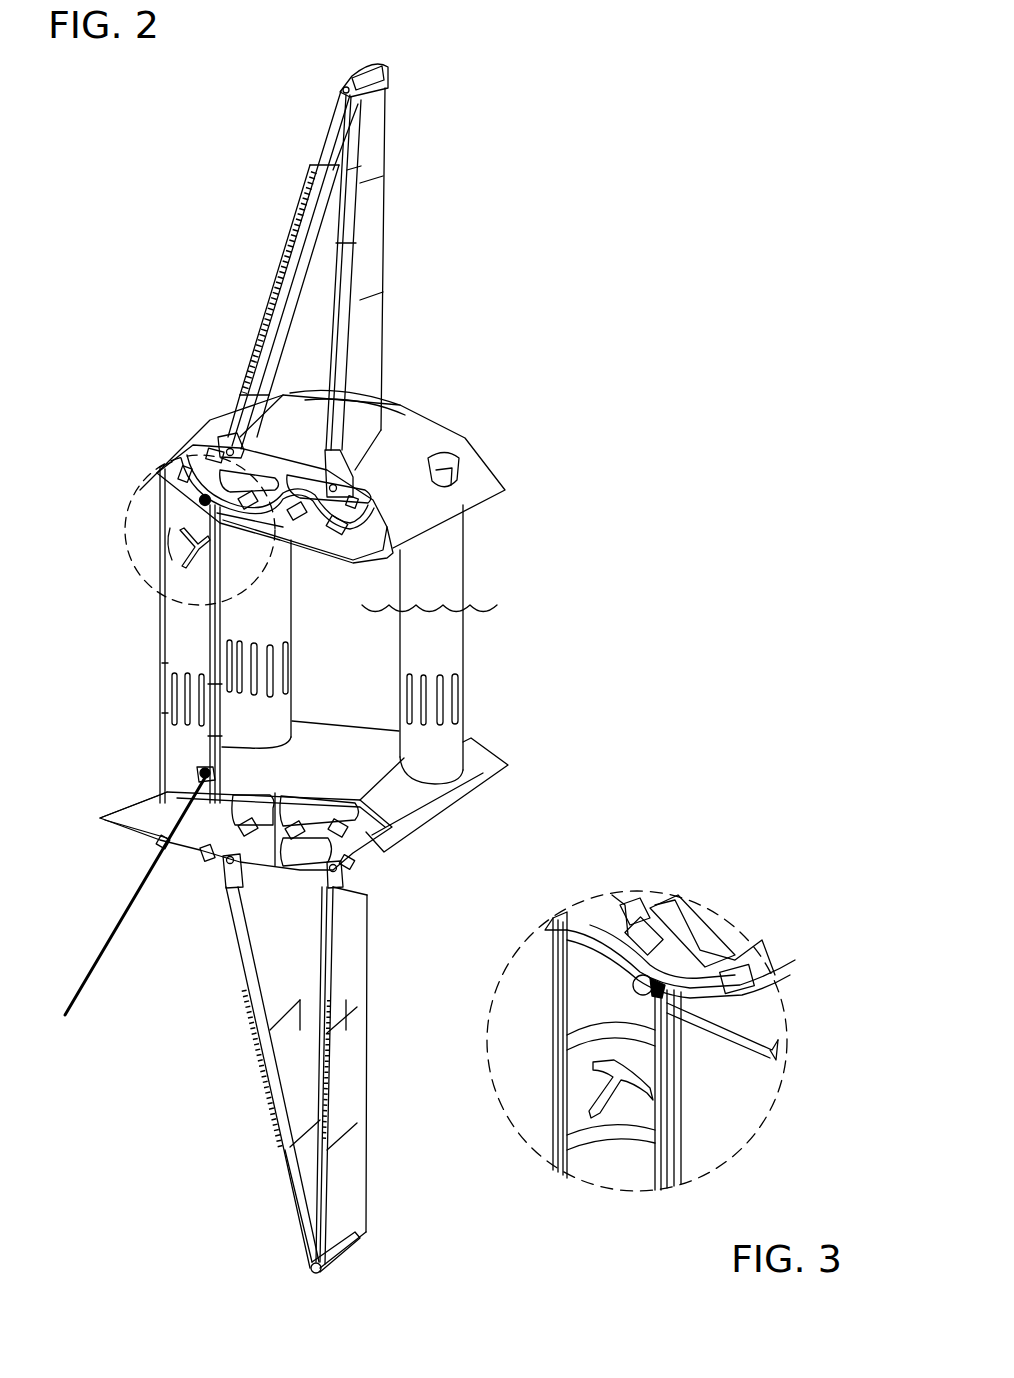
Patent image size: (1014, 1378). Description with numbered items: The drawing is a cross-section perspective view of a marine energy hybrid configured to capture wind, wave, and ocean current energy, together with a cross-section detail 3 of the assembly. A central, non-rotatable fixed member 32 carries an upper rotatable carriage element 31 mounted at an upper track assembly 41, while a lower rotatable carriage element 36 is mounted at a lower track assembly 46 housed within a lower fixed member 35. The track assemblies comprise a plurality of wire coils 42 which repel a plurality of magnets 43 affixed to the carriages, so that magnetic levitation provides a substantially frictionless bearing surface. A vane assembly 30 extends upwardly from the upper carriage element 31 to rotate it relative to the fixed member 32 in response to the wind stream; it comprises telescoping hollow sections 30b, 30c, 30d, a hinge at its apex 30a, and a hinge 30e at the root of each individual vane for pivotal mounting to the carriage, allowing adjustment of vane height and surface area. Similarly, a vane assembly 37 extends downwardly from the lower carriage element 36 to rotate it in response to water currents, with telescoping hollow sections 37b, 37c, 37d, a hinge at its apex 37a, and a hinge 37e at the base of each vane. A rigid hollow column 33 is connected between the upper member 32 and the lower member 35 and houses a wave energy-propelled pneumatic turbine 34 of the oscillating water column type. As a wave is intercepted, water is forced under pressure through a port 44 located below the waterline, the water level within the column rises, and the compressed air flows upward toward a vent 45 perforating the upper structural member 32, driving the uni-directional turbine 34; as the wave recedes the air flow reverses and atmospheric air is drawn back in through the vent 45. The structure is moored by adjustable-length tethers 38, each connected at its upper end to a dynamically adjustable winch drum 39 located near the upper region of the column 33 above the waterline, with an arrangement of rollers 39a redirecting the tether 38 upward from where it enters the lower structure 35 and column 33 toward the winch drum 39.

In FIG. 2, the detail region of FIG. 3 is at (120, 468).
In FIG. 2, the vane assembly 30 is at (250, 283).
In FIG. 2, the apex 30a is at (355, 80).
In FIG. 2, the hollow section 30b is at (322, 148).
In FIG. 2, the hollow section 30c is at (290, 240).
In FIG. 2, the hollow section 30d is at (245, 367).
In FIG. 2, the hinge at vane root 30e is at (226, 447).
In FIG. 2, the upper rotatable carriage element 31 is at (405, 407).
In FIG. 3, the upper rotatable carriage element 31 is at (683, 955).
In FIG. 2, the fixed member 32 is at (483, 484).
In FIG. 3, the fixed member 32 is at (775, 1040).
In FIG. 2, the column 33 is at (160, 772).
In FIG. 3, the column 33 is at (552, 1108).
In FIG. 2, the pneumatic turbine 34 is at (190, 552).
In FIG. 3, the pneumatic turbine 34 is at (596, 1120).
In FIG. 2, the lower fixed member 35 is at (493, 760).
In FIG. 2, the lower rotatable carriage element 36 is at (352, 893).
In FIG. 2, the vane assembly 37 is at (245, 1058).
In FIG. 2, the apex 37a is at (308, 1268).
In FIG. 2, the hollow section 37b is at (295, 1203).
In FIG. 2, the hollow section 37c is at (270, 1097).
In FIG. 2, the hollow section 37d is at (243, 975).
In FIG. 2, the hinge at vane base 37e is at (224, 875).
In FIG. 2, the tether 38 is at (96, 945).
In FIG. 3, the tether 38 is at (656, 1185).
In FIG. 2, the winch drum 39 is at (203, 502).
In FIG. 3, the winch drum 39 is at (648, 987).
In FIG. 2, the rollers 39a is at (162, 840).
In FIG. 2, the upper track assembly 41 is at (305, 512).
In FIG. 3, the upper track assembly 41 is at (690, 930).
In FIG. 2, the wire coils 42 is at (352, 828).
In FIG. 3, the wire coils 42 is at (640, 937).
In FIG. 2, the magnets 43 is at (362, 862).
In FIG. 3, the magnets 43 is at (668, 895).
In FIG. 2, the port 44 is at (465, 692).
In FIG. 2, the vent 45 is at (458, 458).
In FIG. 2, the lower track assembly 46 is at (372, 856).